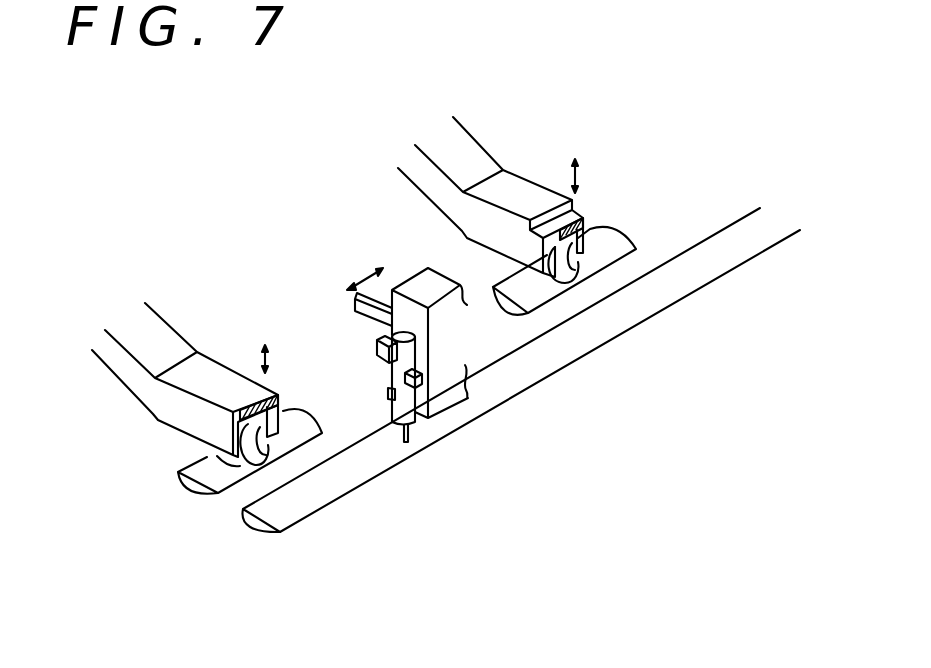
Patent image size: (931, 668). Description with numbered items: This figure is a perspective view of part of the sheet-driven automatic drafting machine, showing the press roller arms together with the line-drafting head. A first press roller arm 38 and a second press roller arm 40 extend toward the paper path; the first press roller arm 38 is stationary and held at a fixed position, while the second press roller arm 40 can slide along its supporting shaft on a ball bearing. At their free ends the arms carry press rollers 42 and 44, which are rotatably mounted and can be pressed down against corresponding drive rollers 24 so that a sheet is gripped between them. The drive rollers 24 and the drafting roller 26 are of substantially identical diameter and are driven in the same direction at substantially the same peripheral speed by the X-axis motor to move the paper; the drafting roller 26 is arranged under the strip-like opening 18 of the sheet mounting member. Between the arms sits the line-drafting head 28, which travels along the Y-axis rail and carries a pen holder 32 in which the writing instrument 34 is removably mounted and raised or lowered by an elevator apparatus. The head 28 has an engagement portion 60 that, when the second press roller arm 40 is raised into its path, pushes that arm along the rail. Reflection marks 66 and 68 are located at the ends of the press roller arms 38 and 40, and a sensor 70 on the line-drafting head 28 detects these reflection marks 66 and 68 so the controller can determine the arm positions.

The strip-like opening 18 is at (713, 282).
The drive roller 24 is at (611, 238).
The drafting roller 26 is at (553, 353).
The line-drafting head 28 is at (450, 385).
The pen holder 32 is at (427, 387).
The writing or drawing instrument 34 is at (415, 420).
The first press roller arm 38 is at (113, 358).
The second press roller arm 40 is at (462, 143).
The press roller 42 is at (212, 491).
The press roller 44 is at (572, 272).
The engagement portion 60 is at (376, 300).
The reflection mark 66 is at (277, 396).
The reflection mark 68 is at (588, 224).
The sensor 70 is at (356, 301).